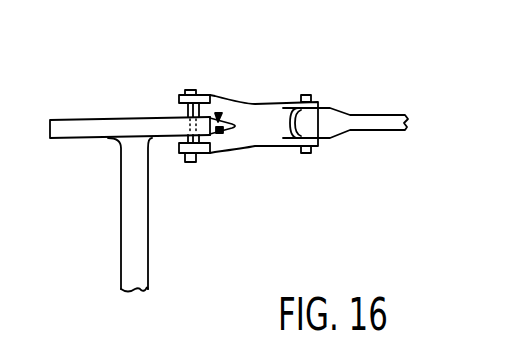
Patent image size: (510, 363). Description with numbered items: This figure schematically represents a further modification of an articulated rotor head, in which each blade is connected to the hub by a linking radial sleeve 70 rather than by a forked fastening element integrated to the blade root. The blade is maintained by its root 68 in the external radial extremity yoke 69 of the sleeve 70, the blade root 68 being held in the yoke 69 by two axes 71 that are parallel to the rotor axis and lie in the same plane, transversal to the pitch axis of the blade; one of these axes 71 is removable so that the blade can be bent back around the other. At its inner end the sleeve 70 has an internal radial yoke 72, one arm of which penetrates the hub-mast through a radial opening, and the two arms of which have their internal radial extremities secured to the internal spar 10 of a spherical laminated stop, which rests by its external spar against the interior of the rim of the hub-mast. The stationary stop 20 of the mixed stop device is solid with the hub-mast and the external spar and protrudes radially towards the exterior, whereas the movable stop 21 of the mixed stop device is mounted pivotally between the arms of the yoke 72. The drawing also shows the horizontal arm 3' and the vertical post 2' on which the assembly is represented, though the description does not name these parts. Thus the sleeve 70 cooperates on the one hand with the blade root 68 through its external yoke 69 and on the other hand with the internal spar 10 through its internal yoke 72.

The support post 2' is at (112, 215).
The arm 3' is at (142, 102).
The internal spar 10 is at (187, 115).
The stationary stop 20 is at (225, 133).
The movable stop 21 is at (218, 114).
The blade root 68 is at (322, 122).
The external radial extremity yoke 69 is at (307, 155).
The radial sleeve 70 is at (276, 118).
The axes 71 is at (307, 93).
The internal radial yoke 72 is at (204, 97).